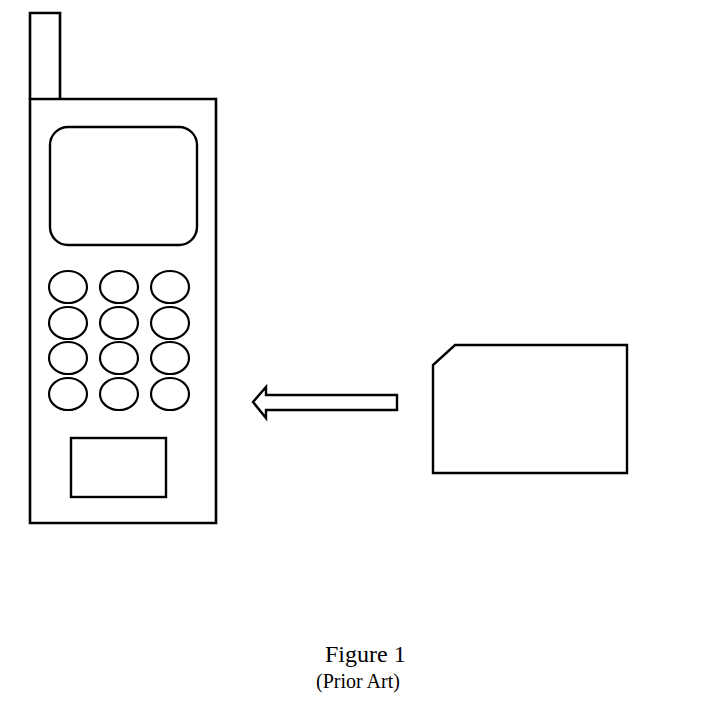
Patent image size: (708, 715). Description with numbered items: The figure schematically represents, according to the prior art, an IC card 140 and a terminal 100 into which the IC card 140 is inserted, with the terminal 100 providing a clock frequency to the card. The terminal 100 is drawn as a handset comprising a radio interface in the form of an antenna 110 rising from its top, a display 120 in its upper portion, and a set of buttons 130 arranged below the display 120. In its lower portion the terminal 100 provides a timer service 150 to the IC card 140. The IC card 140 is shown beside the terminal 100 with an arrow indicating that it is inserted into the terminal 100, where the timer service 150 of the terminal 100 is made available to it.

The terminal 100 is at (203, 122).
The antenna 110 is at (45, 48).
The display 120 is at (182, 190).
The buttons 130 is at (174, 287).
The IC card 140 is at (542, 375).
The timer service 150 is at (145, 472).